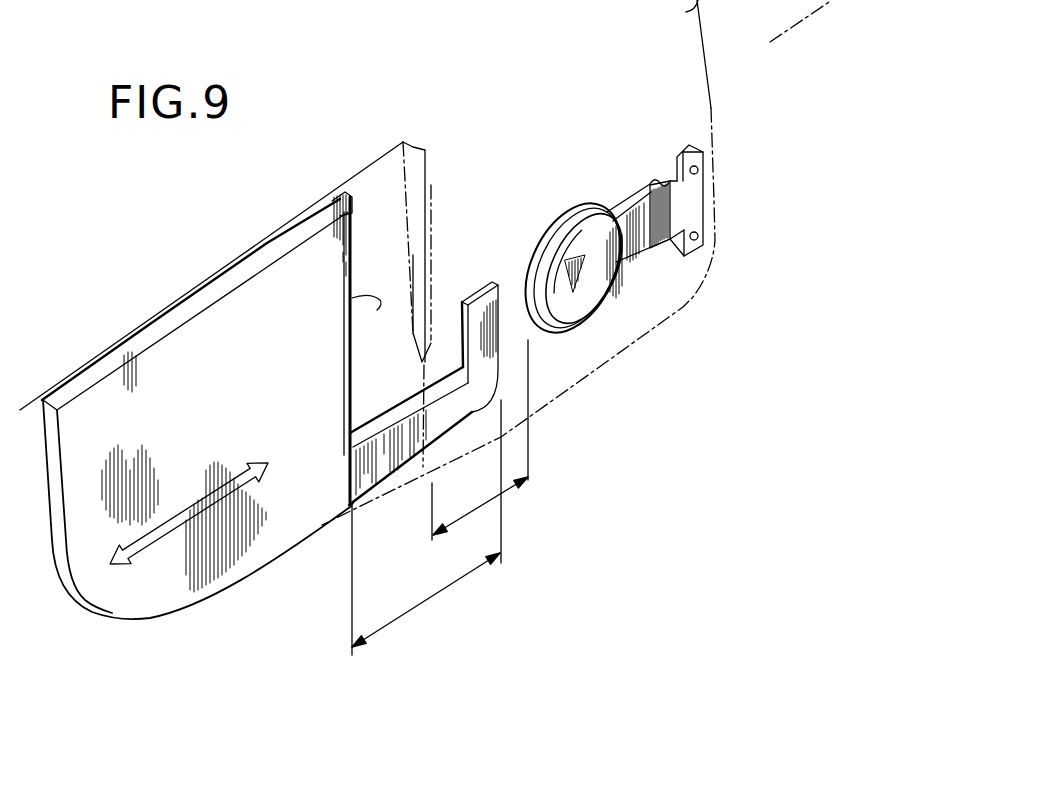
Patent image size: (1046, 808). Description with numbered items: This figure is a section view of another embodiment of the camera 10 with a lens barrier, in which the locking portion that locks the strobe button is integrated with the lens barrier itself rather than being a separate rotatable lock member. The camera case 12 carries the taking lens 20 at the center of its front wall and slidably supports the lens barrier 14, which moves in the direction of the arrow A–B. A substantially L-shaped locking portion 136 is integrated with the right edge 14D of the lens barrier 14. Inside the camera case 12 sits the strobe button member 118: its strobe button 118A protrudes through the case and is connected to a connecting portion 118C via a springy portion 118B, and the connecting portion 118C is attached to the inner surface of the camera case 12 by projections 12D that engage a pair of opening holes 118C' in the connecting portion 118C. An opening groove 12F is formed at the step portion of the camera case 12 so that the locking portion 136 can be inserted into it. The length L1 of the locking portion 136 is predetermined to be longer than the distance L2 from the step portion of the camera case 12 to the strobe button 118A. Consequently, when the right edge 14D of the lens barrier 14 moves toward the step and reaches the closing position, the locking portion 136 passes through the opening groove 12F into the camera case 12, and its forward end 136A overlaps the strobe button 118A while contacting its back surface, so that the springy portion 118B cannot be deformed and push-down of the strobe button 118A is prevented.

The camera 10 is at (298, 360).
The camera case 12 is at (692, 101).
The projections 12D is at (698, 171).
The opening groove 12F is at (425, 345).
The lens barrier 14 is at (217, 308).
The right edge of the lens barrier 14D is at (348, 230).
The taking lens 20 is at (350, 398).
The strobe button member 118 is at (600, 290).
The strobe button 118A is at (574, 303).
The springy portion 118B is at (535, 80).
The connecting portion 118C is at (737, 204).
The opening holes 118C' is at (735, 206).
The locking portion 136 is at (385, 440).
The forward end of the locking portion 136A is at (500, 304).
The length L1 is at (437, 593).
The distance L2 is at (486, 500).
The arrow A is at (180, 528).
The arrow B is at (276, 468).